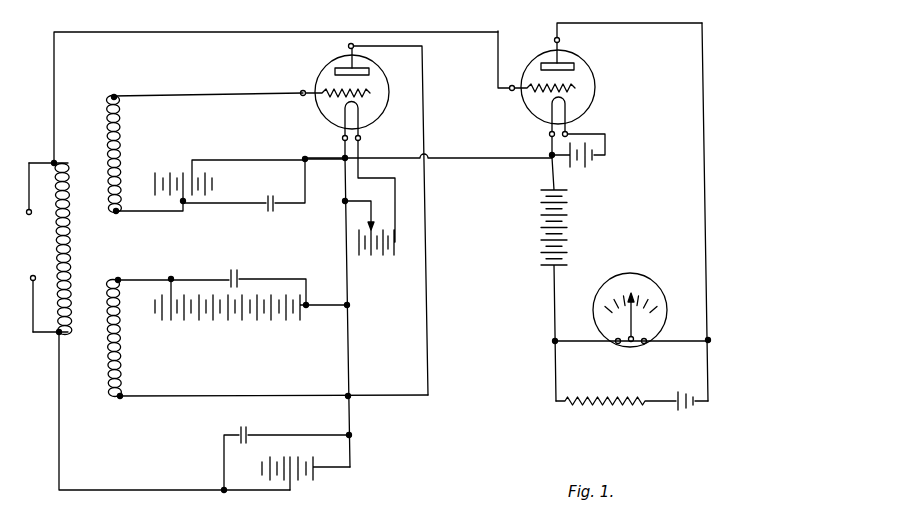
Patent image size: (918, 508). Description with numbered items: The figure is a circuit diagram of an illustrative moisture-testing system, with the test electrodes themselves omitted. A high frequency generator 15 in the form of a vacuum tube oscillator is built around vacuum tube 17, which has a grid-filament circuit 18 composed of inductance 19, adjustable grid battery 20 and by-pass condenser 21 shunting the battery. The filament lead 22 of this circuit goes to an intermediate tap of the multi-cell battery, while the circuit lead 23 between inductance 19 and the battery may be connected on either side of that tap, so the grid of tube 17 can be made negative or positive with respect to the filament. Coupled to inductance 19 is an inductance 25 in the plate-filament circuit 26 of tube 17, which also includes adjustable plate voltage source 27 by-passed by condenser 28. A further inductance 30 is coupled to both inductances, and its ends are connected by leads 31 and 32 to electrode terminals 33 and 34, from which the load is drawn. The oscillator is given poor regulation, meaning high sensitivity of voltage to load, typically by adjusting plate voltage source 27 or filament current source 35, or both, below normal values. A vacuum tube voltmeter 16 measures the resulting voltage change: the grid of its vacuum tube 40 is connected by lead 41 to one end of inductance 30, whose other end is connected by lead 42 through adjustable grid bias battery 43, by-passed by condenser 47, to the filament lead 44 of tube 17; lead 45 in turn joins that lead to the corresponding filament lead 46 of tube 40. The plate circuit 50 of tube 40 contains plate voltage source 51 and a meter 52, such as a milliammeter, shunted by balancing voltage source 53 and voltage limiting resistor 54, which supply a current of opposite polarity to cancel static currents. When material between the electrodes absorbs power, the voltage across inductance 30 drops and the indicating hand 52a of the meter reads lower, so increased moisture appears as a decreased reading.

The high frequency generator 15 is at (410, 28).
The vacuum tube voltmeter 16 is at (528, 54).
The vacuum tube 17 is at (326, 66).
The grid-filament circuit 18 is at (212, 95).
The inductance 19 is at (106, 133).
The adjustable grid battery 20 is at (155, 174).
The by-pass condenser 21 is at (267, 197).
The filament lead 22 is at (236, 159).
The circuit lead 23 is at (126, 215).
The inductance 25 is at (107, 349).
The plate-filament circuit 26 is at (428, 251).
The adjustable plate voltage source 27 is at (256, 318).
The condenser 28 is at (227, 271).
The inductance 30 is at (70, 251).
The lead 31 is at (33, 162).
The lead 32 is at (39, 334).
The electrode terminal 33 is at (26, 212).
The electrode terminal 34 is at (30, 278).
The filament current source 35 is at (379, 258).
The vacuum tube 40 is at (588, 72).
The lead 41 is at (245, 31).
The lead 42 is at (59, 422).
The grid bias battery 43 is at (303, 478).
The filament lead 44 is at (344, 190).
The lead 45 is at (482, 158).
The filament lead 46 is at (547, 154).
The condenser 47 is at (239, 434).
The plate circuit 50 is at (707, 62).
The plate voltage source 51 is at (543, 220).
The meter 52 is at (650, 275).
The indicating hand 52a is at (640, 330).
The balancing voltage source 53 is at (690, 405).
The voltage limiting resistor 54 is at (598, 405).